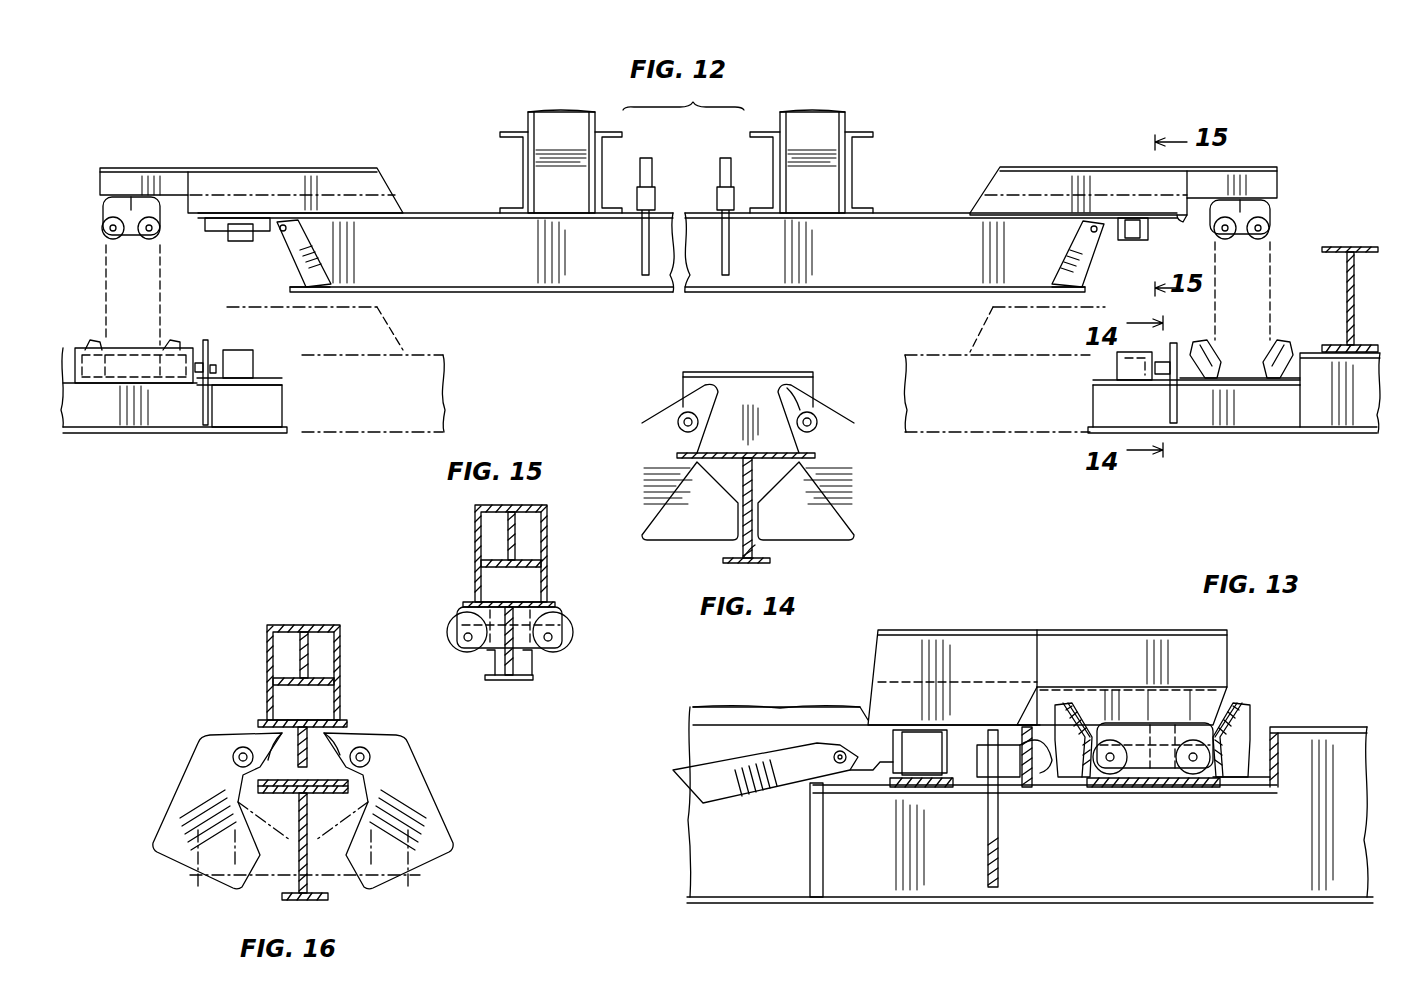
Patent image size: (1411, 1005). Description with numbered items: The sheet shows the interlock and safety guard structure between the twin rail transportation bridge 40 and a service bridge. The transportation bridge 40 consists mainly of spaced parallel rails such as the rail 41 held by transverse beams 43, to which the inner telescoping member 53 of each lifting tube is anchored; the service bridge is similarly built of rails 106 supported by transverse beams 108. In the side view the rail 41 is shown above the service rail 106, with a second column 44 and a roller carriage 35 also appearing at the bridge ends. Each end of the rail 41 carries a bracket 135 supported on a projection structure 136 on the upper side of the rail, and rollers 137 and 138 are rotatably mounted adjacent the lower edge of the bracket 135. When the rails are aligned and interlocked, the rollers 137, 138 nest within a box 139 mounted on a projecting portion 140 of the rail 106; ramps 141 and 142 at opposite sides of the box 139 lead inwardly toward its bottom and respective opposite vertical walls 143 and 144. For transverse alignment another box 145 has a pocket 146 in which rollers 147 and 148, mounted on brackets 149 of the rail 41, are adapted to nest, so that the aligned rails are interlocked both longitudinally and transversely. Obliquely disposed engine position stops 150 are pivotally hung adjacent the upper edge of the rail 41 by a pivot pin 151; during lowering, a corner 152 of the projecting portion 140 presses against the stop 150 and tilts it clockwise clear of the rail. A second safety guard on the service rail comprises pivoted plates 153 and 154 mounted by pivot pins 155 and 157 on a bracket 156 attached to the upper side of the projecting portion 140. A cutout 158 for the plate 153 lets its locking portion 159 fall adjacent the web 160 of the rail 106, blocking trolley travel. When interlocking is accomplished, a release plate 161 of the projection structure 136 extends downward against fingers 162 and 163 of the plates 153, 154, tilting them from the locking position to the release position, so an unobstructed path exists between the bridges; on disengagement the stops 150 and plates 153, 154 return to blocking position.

In FIG. 12, the roller carriage 35 is at (131, 205).
In FIG. 12, the transportation bridge 40 is at (944, 190).
In FIG. 12, the rail 41 is at (862, 270).
In FIG. 15, the rail 41 is at (465, 604).
In FIG. 13, the rail 41 is at (690, 857).
In FIG. 12, the transverse beam 43 is at (527, 172).
In FIG. 12, the right column 44 is at (850, 170).
In FIG. 12, the inner telescoping member 53 is at (528, 114).
In FIG. 12, the rail 106 is at (1362, 415).
In FIG. 12, the transverse beam 108 is at (1350, 247).
In FIG. 13, the bracket 135 is at (1205, 697).
In FIG. 12, the projection structure 136 is at (330, 180).
In FIG. 14, the projection structure 136 is at (748, 375).
In FIG. 15, the projection structure 136 is at (474, 543).
In FIG. 16, the projection structure 136 is at (266, 665).
In FIG. 13, the projection structure 136 is at (958, 735).
In FIG. 12, the roller 137 is at (105, 238).
In FIG. 13, the roller 137 is at (1195, 775).
In FIG. 12, the roller 138 is at (153, 238).
In FIG. 13, the roller 138 is at (1110, 775).
In FIG. 12, the box 139 is at (128, 347).
In FIG. 13, the box 139 is at (1250, 725).
In FIG. 12, the projecting portion 140 is at (118, 433).
In FIG. 14, the projecting portion 140 is at (770, 563).
In FIG. 13, the ramp 141 is at (1238, 708).
In FIG. 13, the ramp 142 is at (1088, 735).
In FIG. 13, the vertical wall 143 is at (1222, 775).
In FIG. 13, the vertical wall 144 is at (1085, 770).
In FIG. 12, the box 145 is at (255, 355).
In FIG. 13, the box 145 is at (882, 795).
In FIG. 12, the pocket 146 is at (1125, 390).
In FIG. 12, the roller 147 is at (232, 240).
In FIG. 15, the roller 147 is at (562, 648).
In FIG. 13, the roller 147 is at (920, 735).
In FIG. 15, the roller 148 is at (458, 644).
In FIG. 12, the bracket 149 is at (1145, 238).
In FIG. 15, the bracket 149 is at (563, 618).
In FIG. 13, the bracket 149 is at (893, 740).
In FIG. 12, the engine position stop 150 is at (310, 272).
In FIG. 13, the engine position stop 150 is at (735, 765).
In FIG. 12, the pivot pin 151 is at (283, 232).
In FIG. 13, the pivot pin 151 is at (845, 745).
In FIG. 12, the corner 152 is at (283, 381).
In FIG. 13, the corner 152 is at (825, 787).
In FIG. 12, the pivoted plate 153 is at (208, 425).
In FIG. 14, the pivoted plate 153 is at (848, 468).
In FIG. 16, the pivoted plate 153 is at (440, 848).
In FIG. 13, the pivoted plate 153 is at (998, 865).
In FIG. 14, the pivoted plate 154 is at (655, 530).
In FIG. 16, the pivoted plate 154 is at (172, 848).
In FIG. 12, the pivot pin 155 is at (212, 362).
In FIG. 14, the pivot pin 155 is at (812, 418).
In FIG. 16, the pivot pin 155 is at (370, 757).
In FIG. 13, the pivot pin 155 is at (1028, 740).
In FIG. 12, the bracket 156 is at (1190, 345).
In FIG. 14, the bracket 156 is at (745, 405).
In FIG. 16, the bracket 156 is at (355, 738).
In FIG. 13, the bracket 156 is at (978, 740).
In FIG. 16, the pivot pin 157 is at (233, 760).
In FIG. 14, the cutout 158 is at (772, 485).
In FIG. 16, the cutout 158 is at (360, 820).
In FIG. 14, the locking portion 159 is at (808, 525).
In FIG. 16, the locking portion 159 is at (380, 885).
In FIG. 12, the web 160 is at (262, 410).
In FIG. 14, the web 160 is at (740, 555).
In FIG. 16, the web 160 is at (282, 883).
In FIG. 12, the release plate 161 is at (1170, 205).
In FIG. 16, the release plate 161 is at (298, 720).
In FIG. 14, the finger 162 is at (795, 393).
In FIG. 16, the finger 162 is at (330, 743).
In FIG. 16, the finger 163 is at (268, 735).